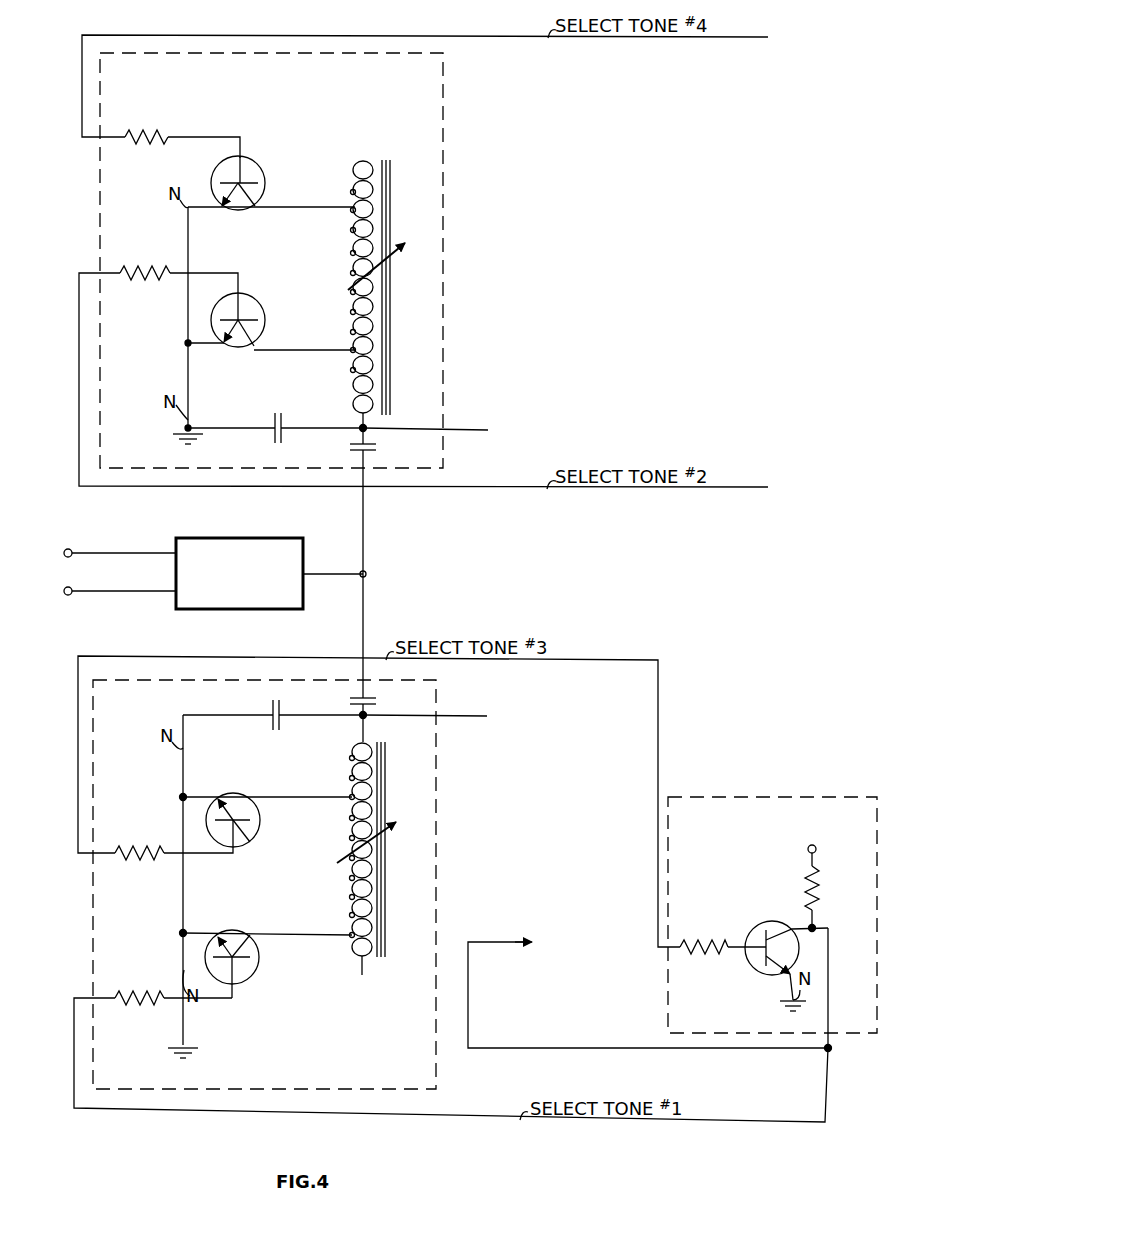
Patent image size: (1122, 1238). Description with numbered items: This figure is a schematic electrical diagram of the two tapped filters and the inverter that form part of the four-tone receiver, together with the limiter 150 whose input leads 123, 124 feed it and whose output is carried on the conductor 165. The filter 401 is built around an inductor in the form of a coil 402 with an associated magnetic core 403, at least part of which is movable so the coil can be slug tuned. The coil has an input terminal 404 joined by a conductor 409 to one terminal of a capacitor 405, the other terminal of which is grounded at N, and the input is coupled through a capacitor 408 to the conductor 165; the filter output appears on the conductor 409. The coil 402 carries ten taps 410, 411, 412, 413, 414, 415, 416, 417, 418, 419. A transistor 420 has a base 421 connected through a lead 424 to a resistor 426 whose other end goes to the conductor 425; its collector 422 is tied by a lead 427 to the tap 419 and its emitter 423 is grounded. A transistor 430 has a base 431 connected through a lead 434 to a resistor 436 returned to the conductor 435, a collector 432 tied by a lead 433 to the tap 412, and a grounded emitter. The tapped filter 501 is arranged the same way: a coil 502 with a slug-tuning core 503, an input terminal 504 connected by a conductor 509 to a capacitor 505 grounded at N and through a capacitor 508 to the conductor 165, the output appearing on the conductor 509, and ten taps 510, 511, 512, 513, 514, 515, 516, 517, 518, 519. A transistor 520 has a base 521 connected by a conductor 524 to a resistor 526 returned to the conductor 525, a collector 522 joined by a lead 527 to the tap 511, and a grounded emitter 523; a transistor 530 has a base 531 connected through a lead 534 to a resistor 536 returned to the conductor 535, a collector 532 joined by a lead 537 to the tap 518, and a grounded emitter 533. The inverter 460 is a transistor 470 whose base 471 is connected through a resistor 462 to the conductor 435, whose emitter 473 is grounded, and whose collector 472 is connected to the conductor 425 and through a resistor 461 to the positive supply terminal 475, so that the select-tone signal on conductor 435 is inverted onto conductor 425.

The limiter input terminal 123 is at (124, 552).
The limiter input terminal 124 is at (124, 590).
The limiter 150 is at (232, 540).
The conductor 165 is at (364, 572).
The filter 401 is at (250, 1096).
The coil 402 is at (370, 748).
The magnetic core 403 is at (386, 788).
The input terminal 404 is at (368, 714).
The capacitor 405 is at (270, 710).
The capacitor 408 is at (350, 698).
The conductor 409 is at (468, 716).
The tap 410 is at (351, 758).
The tap 411 is at (351, 778).
The tap 412 is at (351, 797).
The tap 413 is at (351, 818).
The tap 414 is at (351, 838).
The tap 415 is at (351, 858).
The tap 416 is at (351, 878).
The tap 417 is at (351, 897).
The tap 418 is at (351, 915).
The tap 419 is at (351, 936).
The transistor 420 is at (219, 970).
The base 421 is at (238, 978).
The collector 422 is at (252, 952).
The emitter 423 is at (222, 950).
The base lead 424 is at (198, 1002).
The conductor 425 is at (74, 1025).
The resistor 426 is at (132, 1006).
The collector lead 427 is at (258, 926).
The transistor 430 is at (267, 809).
The base 431 is at (246, 838).
The collector 432 is at (248, 810).
The emitter 433 is at (226, 796).
The base lead 434 is at (236, 856).
The conductor 435 is at (78, 750).
The resistor 436 is at (132, 860).
The inverter 460 is at (750, 797).
The resistor 461 is at (820, 892).
The resistor 462 is at (718, 940).
The transistor 470 is at (770, 942).
The base 471 is at (760, 960).
The collector 472 is at (782, 925).
The emitter 473 is at (782, 972).
The supply terminal 475 is at (815, 846).
The tapped filter 501 is at (457, 258).
The coil 502 is at (366, 162).
The magnetic core 503 is at (390, 210).
The input terminal 504 is at (367, 426).
The capacitor 505 is at (272, 420).
The capacitor 508 is at (378, 450).
The conductor 509 is at (455, 430).
The tap 510 is at (352, 372).
The tap 511 is at (352, 352).
The tap 512 is at (352, 333).
The tap 513 is at (352, 312).
The tap 514 is at (352, 292).
The tap 515 is at (352, 273).
The tap 516 is at (352, 253).
The tap 517 is at (352, 231).
The tap 518 is at (352, 209).
The tap 519 is at (352, 190).
The transistor 520 is at (243, 325).
The base 521 is at (242, 305).
The collector 522 is at (256, 333).
The emitter 523 is at (222, 330).
The conductor 524 is at (236, 270).
The conductor 525 is at (79, 340).
The resistor 526 is at (156, 270).
The emitter lead 527 is at (286, 350).
The transistor 530 is at (236, 159).
The base 531 is at (242, 165).
The collector 532 is at (258, 192).
The emitter 533 is at (225, 190).
The collector lead 534 is at (216, 134).
The conductor 535 is at (82, 74).
The resistor 536 is at (150, 132).
The emitter lead 537 is at (288, 208).